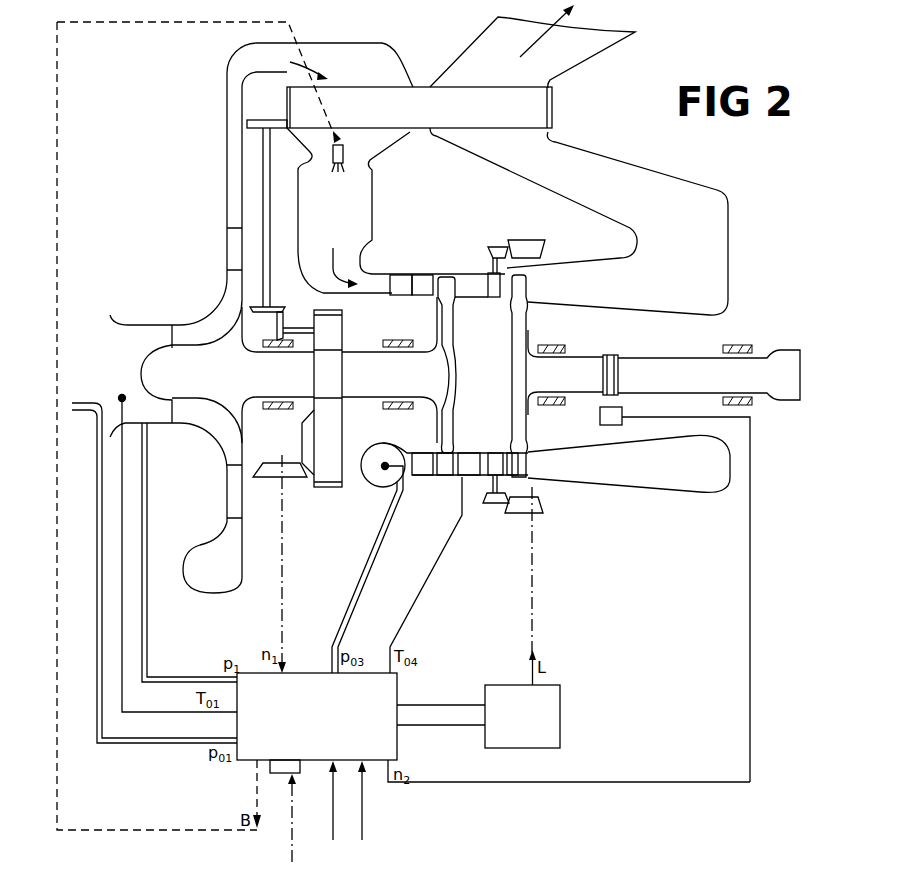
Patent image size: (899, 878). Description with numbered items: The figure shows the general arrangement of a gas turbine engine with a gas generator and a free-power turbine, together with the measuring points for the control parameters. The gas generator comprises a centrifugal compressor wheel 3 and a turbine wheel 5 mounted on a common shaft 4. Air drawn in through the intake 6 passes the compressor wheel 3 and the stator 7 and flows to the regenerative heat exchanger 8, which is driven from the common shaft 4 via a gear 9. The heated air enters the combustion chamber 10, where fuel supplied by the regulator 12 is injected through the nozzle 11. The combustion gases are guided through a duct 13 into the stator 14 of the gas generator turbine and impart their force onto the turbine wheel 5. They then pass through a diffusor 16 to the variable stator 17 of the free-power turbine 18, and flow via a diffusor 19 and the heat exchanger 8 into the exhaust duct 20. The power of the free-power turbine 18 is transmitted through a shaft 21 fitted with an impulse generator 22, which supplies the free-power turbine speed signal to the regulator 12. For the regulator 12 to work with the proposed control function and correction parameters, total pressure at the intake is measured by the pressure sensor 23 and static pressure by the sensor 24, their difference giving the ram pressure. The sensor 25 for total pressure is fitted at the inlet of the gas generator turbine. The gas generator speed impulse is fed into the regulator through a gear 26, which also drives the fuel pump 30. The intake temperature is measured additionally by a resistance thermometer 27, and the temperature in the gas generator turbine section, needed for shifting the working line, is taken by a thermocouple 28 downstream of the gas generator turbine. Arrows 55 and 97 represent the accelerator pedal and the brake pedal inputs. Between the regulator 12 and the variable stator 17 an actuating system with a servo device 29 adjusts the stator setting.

The centrifugal compressor wheel 3 is at (220, 442).
The common shaft 4 is at (363, 362).
The turbine wheel 5 is at (445, 343).
The intake 6 is at (118, 337).
The stator 7 is at (227, 243).
The regenerative heat exchanger 8 is at (366, 101).
The gear 9 is at (271, 290).
The combustion chamber 10 is at (352, 228).
The nozzle 11 is at (345, 157).
The regulator 12 is at (323, 684).
The duct 13 is at (388, 290).
The stator 14 is at (425, 275).
The diffusor 16 is at (487, 285).
The variable stator 17 is at (488, 250).
The free-power turbine 18 is at (522, 338).
The diffusor 19 is at (598, 275).
The exhaust duct 20 is at (590, 44).
The shaft 21 is at (645, 376).
The impulse generator 22 is at (601, 413).
The pressure sensor 23 is at (92, 412).
The sensor 24 is at (150, 470).
The sensor 25 is at (380, 472).
The gear 26 is at (288, 559).
The resistance thermometer 27 is at (122, 395).
The thermocouple 28 is at (464, 477).
The servo device 29 is at (536, 728).
The fuel pump 30 is at (284, 777).
The arrow (accelerator pedal) 55 is at (332, 800).
The arrow (brake pedal) 97 is at (361, 800).